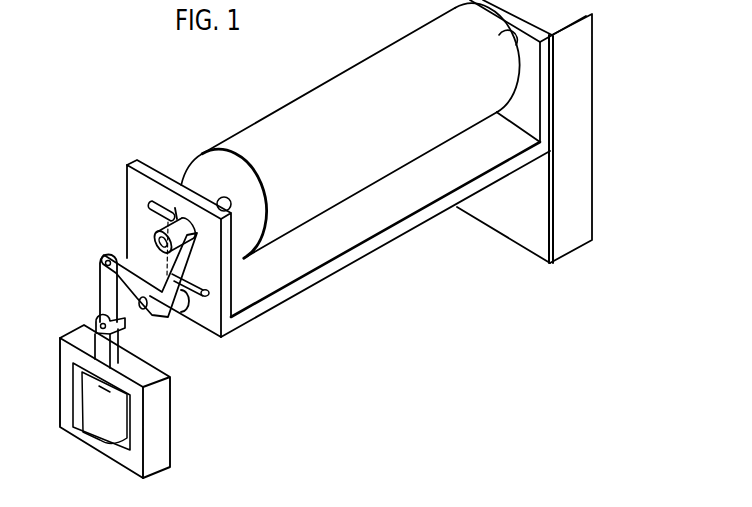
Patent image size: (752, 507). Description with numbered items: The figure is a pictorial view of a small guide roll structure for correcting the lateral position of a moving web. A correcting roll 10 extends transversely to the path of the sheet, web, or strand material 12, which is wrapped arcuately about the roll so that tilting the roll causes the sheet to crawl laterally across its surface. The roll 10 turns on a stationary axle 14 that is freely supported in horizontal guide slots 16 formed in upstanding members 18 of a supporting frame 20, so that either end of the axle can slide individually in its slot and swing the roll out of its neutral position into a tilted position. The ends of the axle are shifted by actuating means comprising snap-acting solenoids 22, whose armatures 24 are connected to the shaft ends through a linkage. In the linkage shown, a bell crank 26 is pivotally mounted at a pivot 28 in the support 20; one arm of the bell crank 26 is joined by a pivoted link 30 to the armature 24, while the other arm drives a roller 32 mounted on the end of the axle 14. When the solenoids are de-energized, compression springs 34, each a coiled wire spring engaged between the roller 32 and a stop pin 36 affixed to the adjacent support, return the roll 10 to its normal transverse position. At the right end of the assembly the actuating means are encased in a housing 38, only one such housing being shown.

The correcting roll 10 is at (386, 137).
The sheet, web, or strand material 12 is at (410, 501).
The stationary axle 14 is at (218, 197).
The guide slots 16 is at (151, 205).
The upstanding members 18 is at (127, 172).
The supporting frame 20 is at (328, 253).
The snap-acting solenoids 22 is at (61, 397).
The armatures 24 is at (95, 333).
The bell crank 26 is at (130, 279).
The pivot 28 is at (142, 310).
The pivoted link 30 is at (102, 294).
The roller 32 is at (152, 240).
The compression springs 34 is at (180, 280).
The stop pin 36 is at (188, 313).
The housing 38 is at (582, 197).